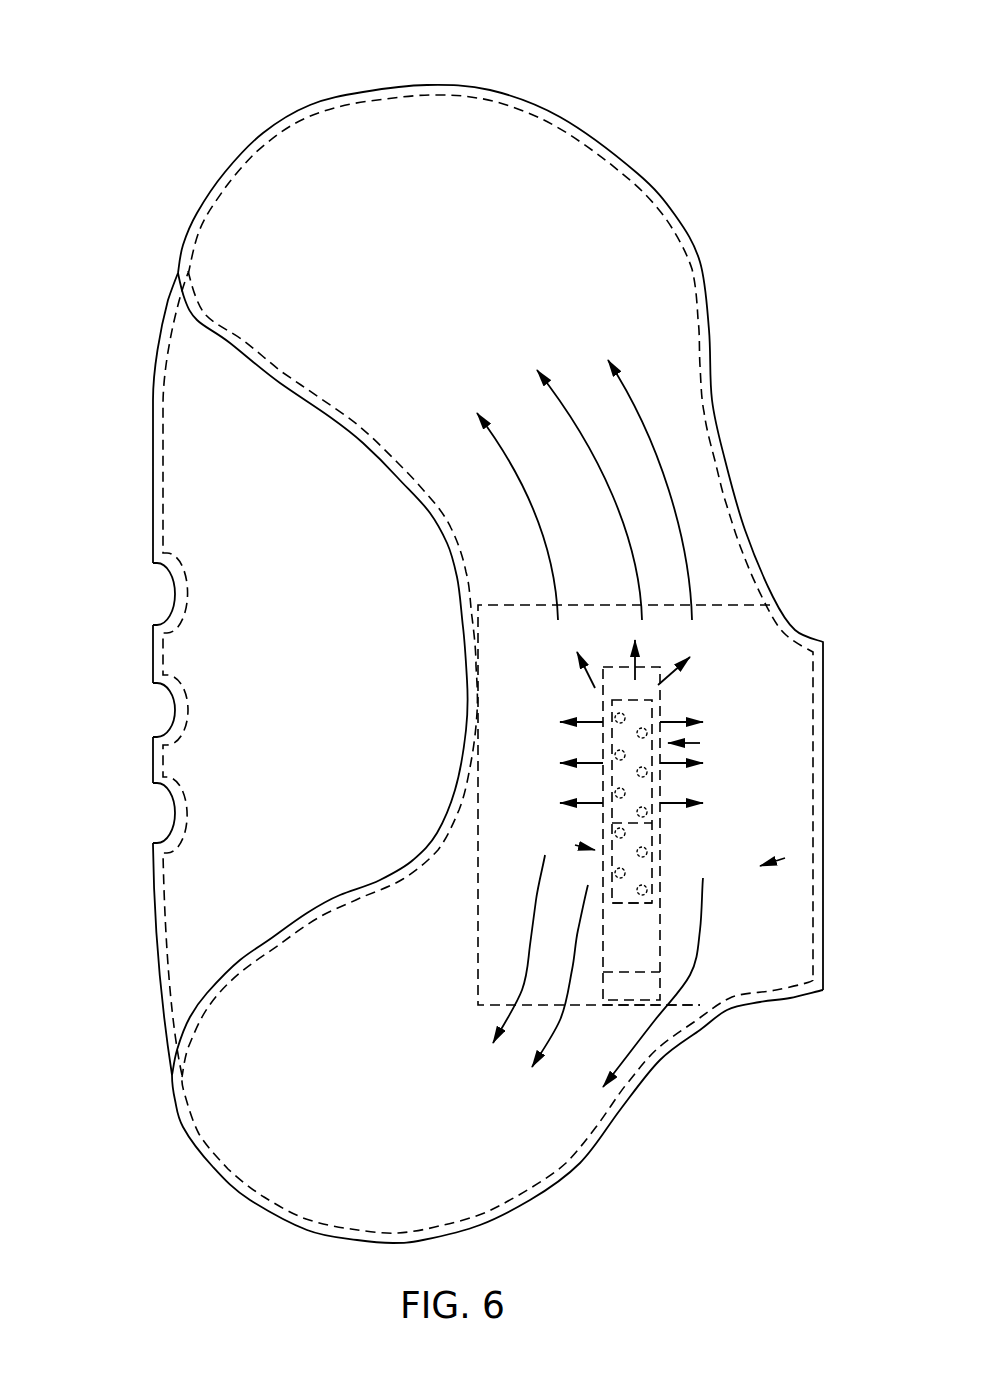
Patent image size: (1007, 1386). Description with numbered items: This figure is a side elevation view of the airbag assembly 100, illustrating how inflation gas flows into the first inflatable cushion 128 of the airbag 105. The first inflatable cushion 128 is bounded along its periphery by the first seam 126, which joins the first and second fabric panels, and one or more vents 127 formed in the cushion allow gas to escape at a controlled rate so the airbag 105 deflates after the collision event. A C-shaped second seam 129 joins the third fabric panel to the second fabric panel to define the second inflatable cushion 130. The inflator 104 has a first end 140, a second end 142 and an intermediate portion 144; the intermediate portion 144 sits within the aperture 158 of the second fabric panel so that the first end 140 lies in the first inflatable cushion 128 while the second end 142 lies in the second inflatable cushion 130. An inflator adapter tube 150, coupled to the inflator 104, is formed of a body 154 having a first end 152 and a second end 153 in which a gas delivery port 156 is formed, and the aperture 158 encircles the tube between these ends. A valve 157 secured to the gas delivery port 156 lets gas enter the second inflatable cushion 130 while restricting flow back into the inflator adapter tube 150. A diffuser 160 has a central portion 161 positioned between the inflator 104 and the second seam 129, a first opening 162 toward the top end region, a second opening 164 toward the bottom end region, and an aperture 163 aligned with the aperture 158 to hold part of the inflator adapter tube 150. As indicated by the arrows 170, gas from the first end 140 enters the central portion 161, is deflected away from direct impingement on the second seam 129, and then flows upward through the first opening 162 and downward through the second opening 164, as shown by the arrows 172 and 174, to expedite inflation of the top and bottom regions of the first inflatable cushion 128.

The airbag assembly 100 is at (137, 46).
The inflator 104 is at (703, 743).
The airbag 105 is at (655, 155).
The first seam 126 is at (157, 526).
The vents 127 is at (157, 812).
The first inflatable cushion 128 is at (187, 434).
The second seam 129 is at (230, 337).
The second inflatable cushion 130 is at (670, 275).
The first end 140 is at (663, 705).
The second end 142 is at (650, 912).
The intermediate portion 144 is at (665, 783).
The inflator adapter tube 150 is at (785, 858).
The first end 152 is at (655, 662).
The second end 153 is at (600, 997).
The body 154 is at (575, 845).
The gas delivery port 156 is at (612, 1000).
The valve 157 is at (690, 995).
The aperture 158 is at (607, 820).
The diffuser 160 is at (708, 553).
The central portion 161 is at (478, 703).
The first opening 162 is at (588, 605).
The aperture 163 is at (658, 835).
The second opening 164 is at (668, 1050).
The arrows 170 is at (592, 722).
The upward air flow 172 is at (633, 397).
The downward air flow 174 is at (573, 980).